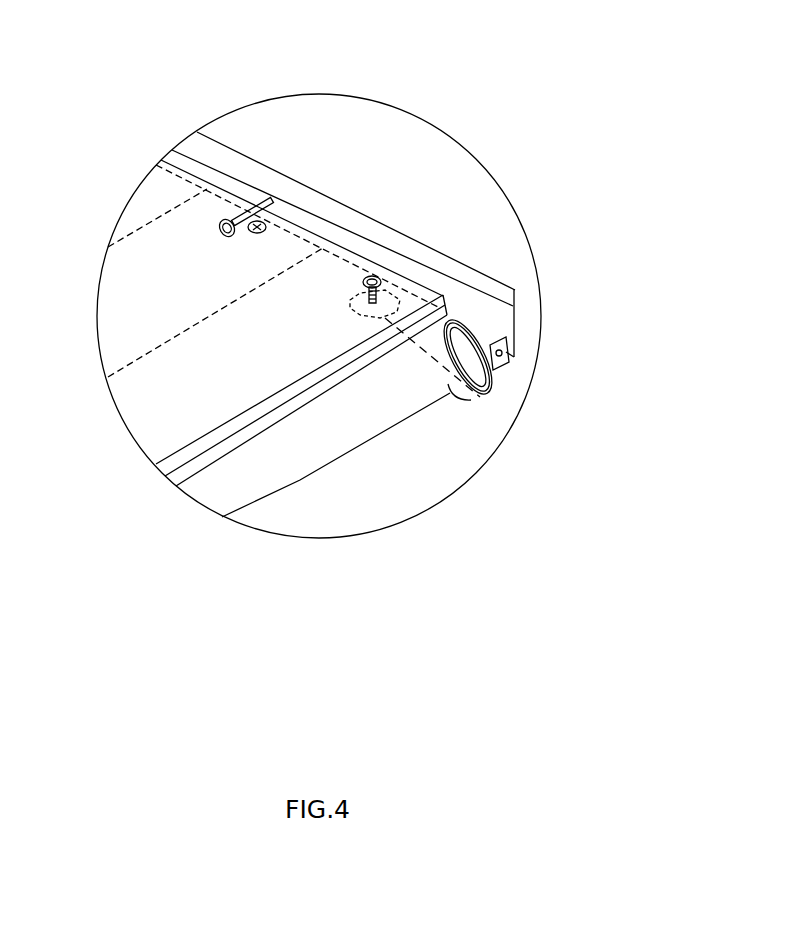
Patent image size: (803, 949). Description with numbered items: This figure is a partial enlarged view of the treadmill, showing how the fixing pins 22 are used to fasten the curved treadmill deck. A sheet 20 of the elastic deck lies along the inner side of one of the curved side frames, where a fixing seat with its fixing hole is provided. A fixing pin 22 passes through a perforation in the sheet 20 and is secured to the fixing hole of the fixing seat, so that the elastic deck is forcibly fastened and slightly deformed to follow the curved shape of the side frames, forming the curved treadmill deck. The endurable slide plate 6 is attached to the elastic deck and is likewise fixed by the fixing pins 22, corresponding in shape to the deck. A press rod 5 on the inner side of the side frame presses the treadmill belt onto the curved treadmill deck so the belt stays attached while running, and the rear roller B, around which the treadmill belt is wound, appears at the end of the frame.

The sheet 20 is at (257, 420).
The fixing pin 22 is at (257, 222).
The press rod 5 is at (203, 222).
The endurable slide plate 6 is at (325, 236).
The rear roller B is at (350, 432).